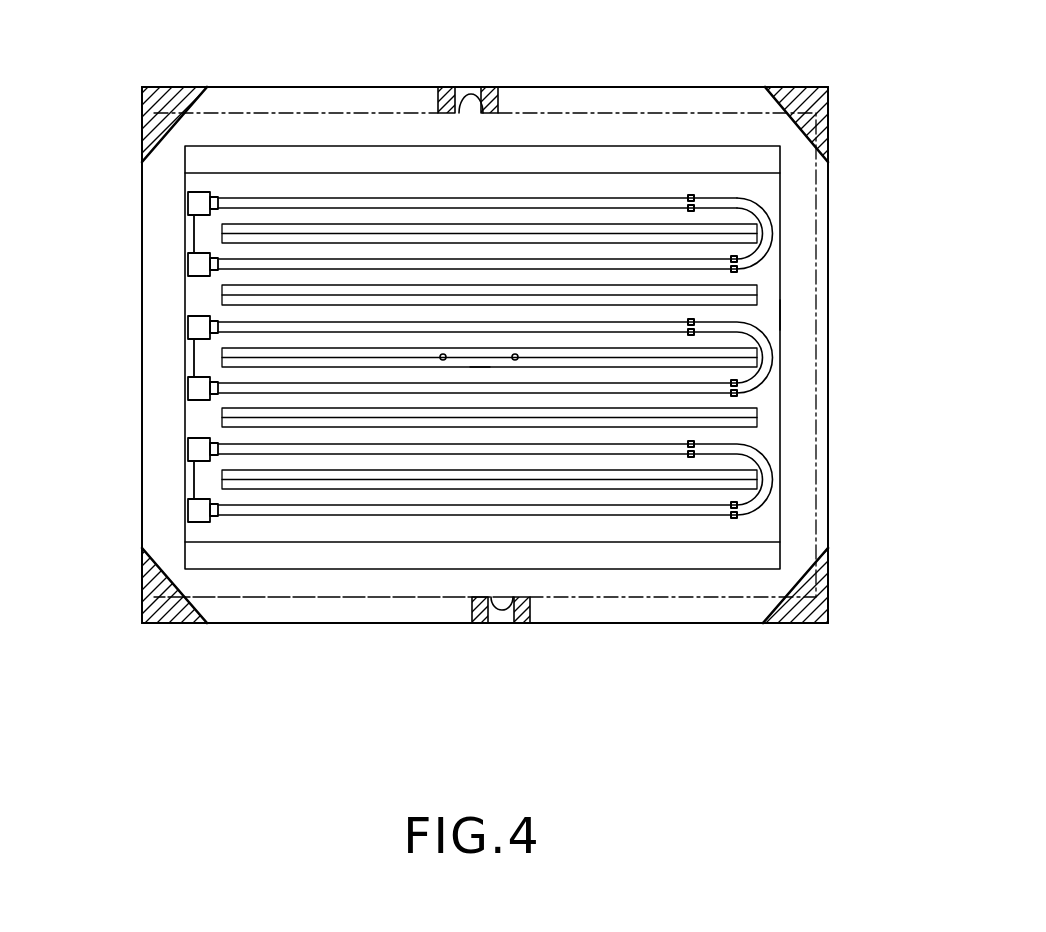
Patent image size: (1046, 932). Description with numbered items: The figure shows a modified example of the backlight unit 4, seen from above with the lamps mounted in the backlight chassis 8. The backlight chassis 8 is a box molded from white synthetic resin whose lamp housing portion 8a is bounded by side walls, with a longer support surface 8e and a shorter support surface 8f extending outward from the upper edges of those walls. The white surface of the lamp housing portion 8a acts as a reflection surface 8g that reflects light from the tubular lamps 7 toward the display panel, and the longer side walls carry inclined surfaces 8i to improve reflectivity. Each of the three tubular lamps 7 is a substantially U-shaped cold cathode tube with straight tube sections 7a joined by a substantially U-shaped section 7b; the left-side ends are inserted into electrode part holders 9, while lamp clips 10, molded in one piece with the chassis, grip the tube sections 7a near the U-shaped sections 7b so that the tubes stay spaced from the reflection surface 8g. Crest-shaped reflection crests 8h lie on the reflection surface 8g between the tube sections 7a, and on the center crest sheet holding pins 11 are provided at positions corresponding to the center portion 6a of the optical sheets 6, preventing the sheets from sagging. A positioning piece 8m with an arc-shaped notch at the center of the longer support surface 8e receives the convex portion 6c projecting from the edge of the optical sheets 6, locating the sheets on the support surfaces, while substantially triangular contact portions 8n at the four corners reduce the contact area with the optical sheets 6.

The backlight unit 4 is at (208, 647).
The optical sheets 6 is at (152, 247).
The center portion of the optical sheets 6a is at (478, 372).
The convex portion 6c is at (480, 128).
The tubular lamps 7 is at (367, 186).
The tube sections 7a is at (423, 198).
The substantially U-shaped sections 7b is at (775, 230).
The backlight chassis 8 is at (687, 632).
The lamp housing portion 8a is at (772, 313).
The longer support surface 8e is at (596, 102).
The shorter support surface 8f is at (822, 378).
The reflection surface 8g is at (293, 315).
The reflection crests 8h is at (222, 349).
The inclined surfaces 8i is at (258, 162).
The positioning piece 8m is at (459, 102).
The contact portions 8n is at (150, 102).
The electrode part holders 9 is at (204, 207).
The lamp clips 10 is at (691, 194).
The sheet holding pins 11 is at (443, 361).